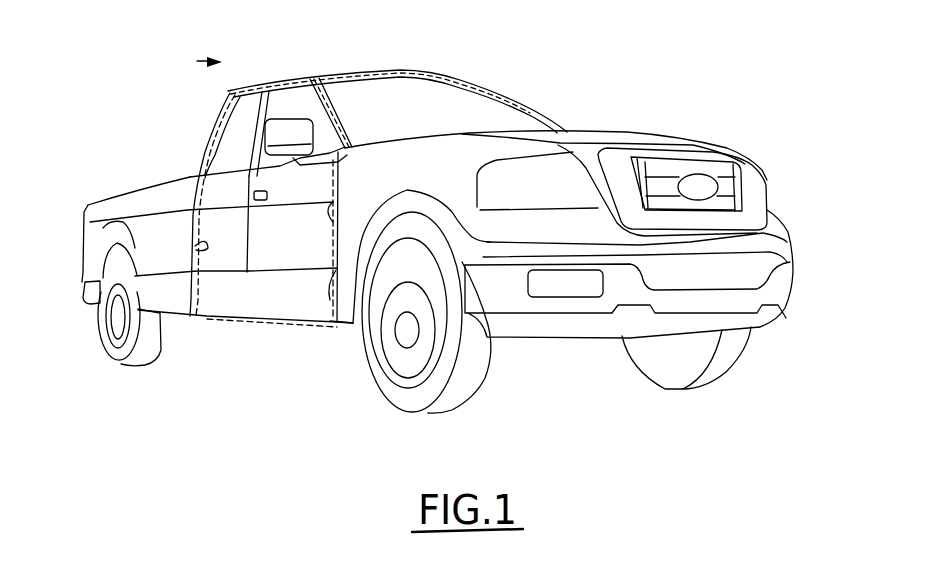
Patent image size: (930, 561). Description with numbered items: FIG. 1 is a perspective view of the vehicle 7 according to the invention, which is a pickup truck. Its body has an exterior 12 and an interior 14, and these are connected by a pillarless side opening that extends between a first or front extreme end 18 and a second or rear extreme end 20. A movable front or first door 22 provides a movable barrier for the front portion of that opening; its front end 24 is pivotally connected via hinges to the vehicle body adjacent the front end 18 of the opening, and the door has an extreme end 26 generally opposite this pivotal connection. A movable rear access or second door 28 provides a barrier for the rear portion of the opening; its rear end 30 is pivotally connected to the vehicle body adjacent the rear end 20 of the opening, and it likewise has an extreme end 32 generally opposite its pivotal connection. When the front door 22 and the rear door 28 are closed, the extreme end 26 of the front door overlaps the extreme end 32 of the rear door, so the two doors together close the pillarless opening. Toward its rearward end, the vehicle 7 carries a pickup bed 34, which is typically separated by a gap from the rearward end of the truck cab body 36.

The vehicle 7 is at (200, 59).
The exterior 12 is at (457, 172).
The interior 14 is at (419, 81).
The front extreme end 18 is at (333, 206).
The rear extreme end 20 is at (187, 250).
The front door 22 is at (291, 288).
The front end of front door 24 is at (326, 268).
The extreme end of front door 26 is at (250, 153).
The rear door 28 is at (230, 265).
The rear end of rear door 30 is at (213, 260).
The extreme end of rear door 32 is at (253, 282).
The pickup bed 34 is at (145, 193).
The truck cab body 36 is at (343, 73).